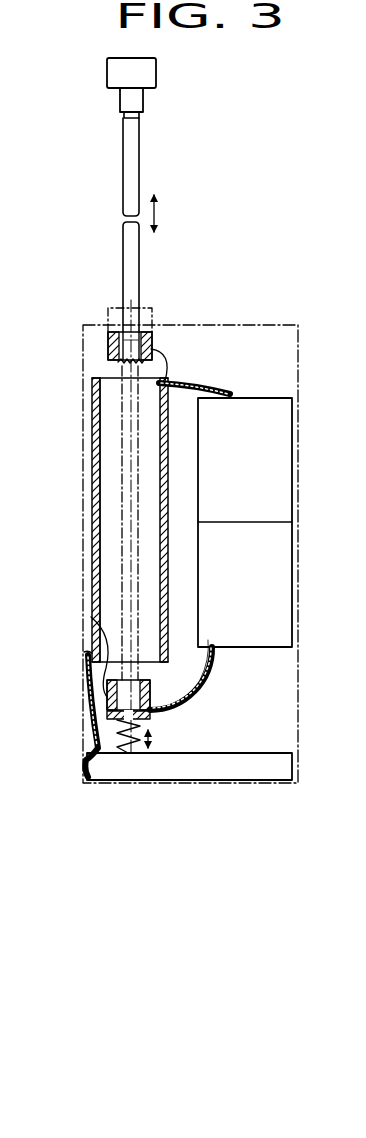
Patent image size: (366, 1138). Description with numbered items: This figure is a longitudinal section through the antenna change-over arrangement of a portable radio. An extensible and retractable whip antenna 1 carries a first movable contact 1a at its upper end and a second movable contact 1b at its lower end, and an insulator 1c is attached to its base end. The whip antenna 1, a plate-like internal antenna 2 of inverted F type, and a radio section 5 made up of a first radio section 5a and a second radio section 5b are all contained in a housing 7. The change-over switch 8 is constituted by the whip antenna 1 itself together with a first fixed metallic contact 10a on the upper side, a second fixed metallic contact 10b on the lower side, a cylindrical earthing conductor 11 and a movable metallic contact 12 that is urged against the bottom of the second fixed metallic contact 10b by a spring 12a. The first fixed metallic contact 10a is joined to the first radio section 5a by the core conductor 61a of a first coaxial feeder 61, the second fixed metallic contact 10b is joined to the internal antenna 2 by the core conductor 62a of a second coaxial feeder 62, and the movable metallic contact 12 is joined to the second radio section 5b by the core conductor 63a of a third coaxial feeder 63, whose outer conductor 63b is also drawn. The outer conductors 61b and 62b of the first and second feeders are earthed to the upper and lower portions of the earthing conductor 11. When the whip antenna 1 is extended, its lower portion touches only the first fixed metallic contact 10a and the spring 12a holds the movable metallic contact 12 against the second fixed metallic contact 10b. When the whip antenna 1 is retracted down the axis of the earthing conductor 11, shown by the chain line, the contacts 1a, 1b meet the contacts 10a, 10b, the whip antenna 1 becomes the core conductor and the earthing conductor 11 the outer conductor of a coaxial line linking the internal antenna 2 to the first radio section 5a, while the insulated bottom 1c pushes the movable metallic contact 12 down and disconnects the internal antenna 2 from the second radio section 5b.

The whip antenna 1 is at (123, 187).
The first movable contact 1a is at (122, 103).
The second movable contact 1b is at (127, 332).
The insulator 1c is at (120, 366).
The internal antenna 2 is at (272, 772).
The radio section 5 is at (271, 502).
The first radio section 5a is at (285, 460).
The second radio section 5b is at (288, 565).
The housing 7 is at (282, 325).
The change-over switch 8 is at (91, 436).
The first fixed metallic contact 10a is at (110, 352).
The second fixed metallic contact 10b is at (165, 690).
The cylindrical earthing conductor 11 is at (96, 490).
The movable metallic contact 12 is at (112, 755).
The spring 12a is at (140, 744).
The first coaxial feeder 61 is at (201, 343).
The core conductor of first coaxial feeder 61a is at (164, 346).
The outer conductor of first coaxial feeder 61b is at (184, 382).
The second coaxial feeder 62 is at (65, 692).
The core conductor of second coaxial feeder 62a is at (91, 620).
The outer conductor of second coaxial feeder 62b is at (82, 688).
The third coaxial feeder 63 is at (208, 697).
The core conductor of third coaxial feeder 63a is at (152, 722).
The outer conductor of third coaxial feeder 63b is at (205, 686).